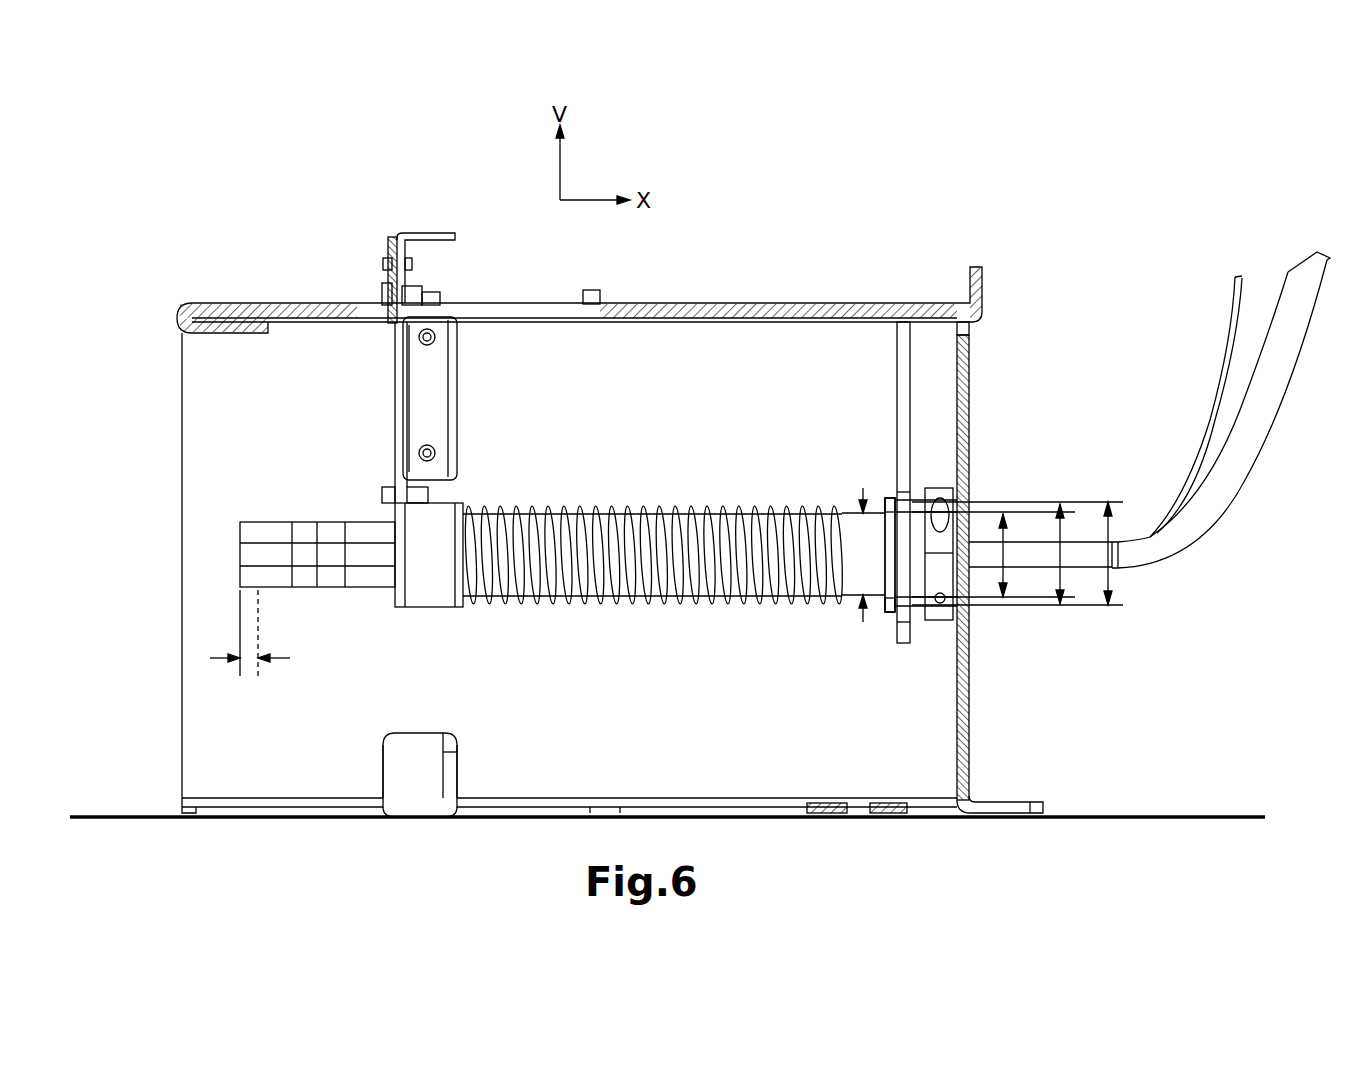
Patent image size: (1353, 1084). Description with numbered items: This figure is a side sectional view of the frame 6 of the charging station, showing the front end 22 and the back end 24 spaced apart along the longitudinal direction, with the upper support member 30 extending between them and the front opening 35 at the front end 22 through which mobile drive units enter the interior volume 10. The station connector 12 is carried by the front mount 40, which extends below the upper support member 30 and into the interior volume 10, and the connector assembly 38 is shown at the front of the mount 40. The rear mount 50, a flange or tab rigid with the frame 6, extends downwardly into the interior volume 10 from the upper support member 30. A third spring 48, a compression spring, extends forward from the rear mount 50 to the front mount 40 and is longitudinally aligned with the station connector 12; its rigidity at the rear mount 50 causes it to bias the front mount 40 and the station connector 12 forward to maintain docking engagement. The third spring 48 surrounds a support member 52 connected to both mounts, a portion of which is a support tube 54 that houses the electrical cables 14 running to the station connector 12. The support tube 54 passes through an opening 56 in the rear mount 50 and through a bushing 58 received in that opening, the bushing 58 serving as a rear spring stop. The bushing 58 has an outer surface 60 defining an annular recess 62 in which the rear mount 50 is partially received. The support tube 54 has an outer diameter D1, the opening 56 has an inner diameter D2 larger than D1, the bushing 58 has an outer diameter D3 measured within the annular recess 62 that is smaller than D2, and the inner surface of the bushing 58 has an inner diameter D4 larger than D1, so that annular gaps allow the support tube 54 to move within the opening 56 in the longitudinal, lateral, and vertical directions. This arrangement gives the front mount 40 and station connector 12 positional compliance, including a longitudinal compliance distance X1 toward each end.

The frame 6 is at (263, 262).
The interior volume 10 is at (205, 712).
The station connector 12 is at (305, 522).
The electrical cables 14 is at (1237, 486).
The front end 22 is at (177, 320).
The back end 24 is at (970, 678).
The upper support member 30 is at (762, 302).
The front opening 35 is at (182, 412).
The connector block 38 is at (240, 556).
The mount 40 is at (397, 352).
The third spring 48 is at (632, 506).
The rear mount 50 is at (897, 354).
The support member 52 is at (860, 510).
The support tube 54 is at (890, 555).
The opening 56 is at (893, 600).
The bushing 58 is at (859, 492).
The outer surface 60 is at (917, 497).
The annular recess 62 is at (942, 604).
The outer diameter D1 is at (865, 555).
The inner diameter D2 is at (1112, 570).
The outer diameter D3 is at (1050, 545).
The inner diameter D4 is at (1007, 557).
The longitudinal compliance distance X1 is at (267, 633).